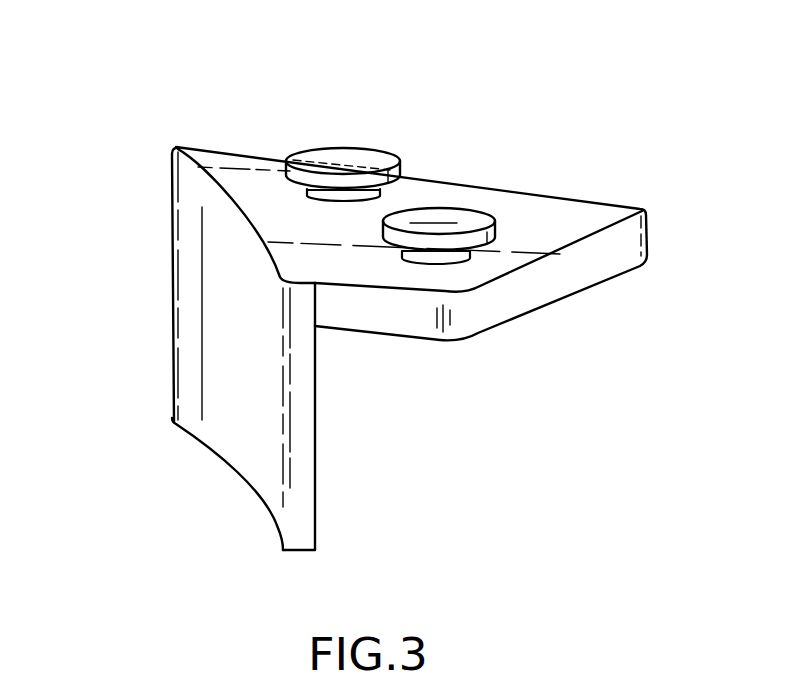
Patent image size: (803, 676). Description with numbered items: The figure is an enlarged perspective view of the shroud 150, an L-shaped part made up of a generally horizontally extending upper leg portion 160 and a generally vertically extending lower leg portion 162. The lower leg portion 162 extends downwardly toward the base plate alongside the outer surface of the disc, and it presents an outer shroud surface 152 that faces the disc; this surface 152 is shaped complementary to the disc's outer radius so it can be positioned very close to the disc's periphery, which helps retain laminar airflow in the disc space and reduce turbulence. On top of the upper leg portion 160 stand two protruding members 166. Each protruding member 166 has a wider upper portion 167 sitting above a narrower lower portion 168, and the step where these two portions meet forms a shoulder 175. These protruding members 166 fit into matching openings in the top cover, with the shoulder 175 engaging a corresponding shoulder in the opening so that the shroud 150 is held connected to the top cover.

The shroud 150 is at (135, 156).
The outer shroud surface 152 is at (190, 325).
The upper leg portion 160 is at (622, 213).
The lower leg portion 162 is at (307, 490).
The protruding members 166 is at (368, 160).
The wider upper portion 167 is at (283, 183).
The narrower lower portion 168 is at (350, 202).
The shoulder 175 is at (283, 186).